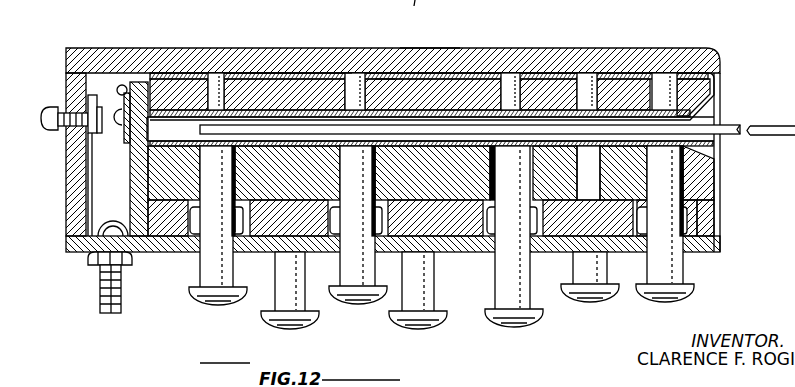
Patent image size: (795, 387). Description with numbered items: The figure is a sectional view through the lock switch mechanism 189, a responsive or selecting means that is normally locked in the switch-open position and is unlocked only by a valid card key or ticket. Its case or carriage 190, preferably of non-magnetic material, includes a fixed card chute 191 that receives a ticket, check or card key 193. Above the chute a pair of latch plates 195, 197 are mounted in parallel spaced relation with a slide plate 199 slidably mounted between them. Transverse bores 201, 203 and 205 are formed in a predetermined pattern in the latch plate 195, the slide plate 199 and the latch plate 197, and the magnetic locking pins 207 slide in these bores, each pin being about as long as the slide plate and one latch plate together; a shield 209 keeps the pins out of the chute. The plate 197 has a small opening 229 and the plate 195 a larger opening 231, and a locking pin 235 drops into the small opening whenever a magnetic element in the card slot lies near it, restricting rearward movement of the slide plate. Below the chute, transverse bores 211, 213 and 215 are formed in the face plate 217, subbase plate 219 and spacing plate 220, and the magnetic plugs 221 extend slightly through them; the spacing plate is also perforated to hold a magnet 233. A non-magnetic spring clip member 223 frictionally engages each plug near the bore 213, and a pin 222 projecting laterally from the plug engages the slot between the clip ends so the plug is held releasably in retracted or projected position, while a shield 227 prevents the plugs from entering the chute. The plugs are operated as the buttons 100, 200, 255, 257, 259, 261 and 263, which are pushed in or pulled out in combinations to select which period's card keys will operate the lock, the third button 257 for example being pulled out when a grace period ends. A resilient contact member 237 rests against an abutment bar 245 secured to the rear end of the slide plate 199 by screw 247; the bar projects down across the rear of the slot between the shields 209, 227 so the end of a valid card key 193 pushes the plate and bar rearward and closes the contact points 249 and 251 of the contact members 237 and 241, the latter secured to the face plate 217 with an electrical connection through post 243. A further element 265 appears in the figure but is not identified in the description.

The button 100 is at (605, 296).
The lock switch mechanism 189 is at (88, 48).
The case or carriage 190 is at (430, 50).
The card chute 191 is at (700, 124).
The card key 193 is at (789, 143).
The latch plate 195 is at (257, 73).
The latch plate 197 is at (440, 106).
The slide plate 199 is at (385, 80).
The button 200 is at (430, 323).
The transverse bore 201 is at (348, 70).
The transverse bore 203 is at (345, 88).
The transverse bore 205 is at (212, 94).
The magnetic locking pins 207 is at (213, 75).
The shield 209 is at (634, 112).
The transverse bore 211 is at (500, 242).
The transverse bore 213 is at (641, 201).
The transverse bore 215 is at (493, 163).
The face plate 217 is at (171, 244).
The subbase plate 219 is at (720, 220).
The spacing plate 220 is at (272, 180).
The magnetic plugs 221 is at (396, 318).
The pin 222 is at (657, 232).
The spring clip member 223 is at (690, 250).
The shield 227 is at (190, 140).
The small opening 229 is at (548, 94).
The larger opening 231 is at (586, 80).
The magnet 233 is at (582, 163).
The locking pin 235 is at (590, 76).
The resilient contact member 237 is at (122, 85).
The resilient contact member 241 is at (100, 215).
The post 243 is at (98, 280).
The abutment bar 245 is at (114, 184).
The screw 247 is at (135, 100).
The contact point 249 is at (148, 160).
The contact point 251 is at (110, 108).
The button 255 is at (218, 298).
The third button 257 is at (294, 325).
The button 259 is at (360, 298).
The button 261 is at (524, 322).
The button 263 is at (693, 296).
The screw 265 is at (54, 107).